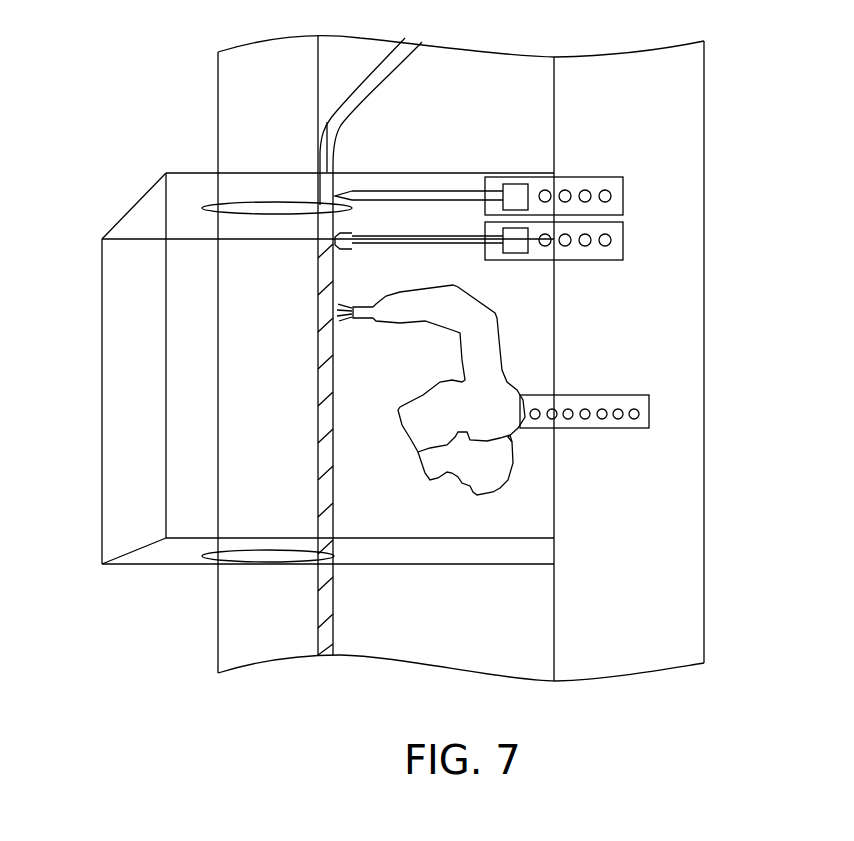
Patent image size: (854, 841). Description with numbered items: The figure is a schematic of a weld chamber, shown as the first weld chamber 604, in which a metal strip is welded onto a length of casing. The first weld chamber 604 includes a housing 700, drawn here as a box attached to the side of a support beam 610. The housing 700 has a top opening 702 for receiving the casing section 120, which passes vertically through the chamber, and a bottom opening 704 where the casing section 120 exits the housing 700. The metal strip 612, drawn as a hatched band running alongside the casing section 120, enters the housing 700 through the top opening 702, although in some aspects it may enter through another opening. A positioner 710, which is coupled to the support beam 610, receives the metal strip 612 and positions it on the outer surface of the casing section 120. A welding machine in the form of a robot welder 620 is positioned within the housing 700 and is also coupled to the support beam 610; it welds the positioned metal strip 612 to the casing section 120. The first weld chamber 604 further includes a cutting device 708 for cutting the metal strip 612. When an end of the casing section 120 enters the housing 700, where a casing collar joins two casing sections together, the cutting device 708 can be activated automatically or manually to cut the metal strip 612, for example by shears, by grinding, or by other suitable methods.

The casing section 120 is at (322, 120).
The first weld chamber 604 is at (102, 239).
The support beam 610 is at (687, 148).
The metal strip 612 is at (335, 540).
The robot welder 620 is at (493, 352).
The housing 700 is at (113, 527).
The top opening 702 is at (280, 215).
The bottom opening 704 is at (233, 558).
The cutting device 708 is at (425, 191).
The positioner 710 is at (463, 237).